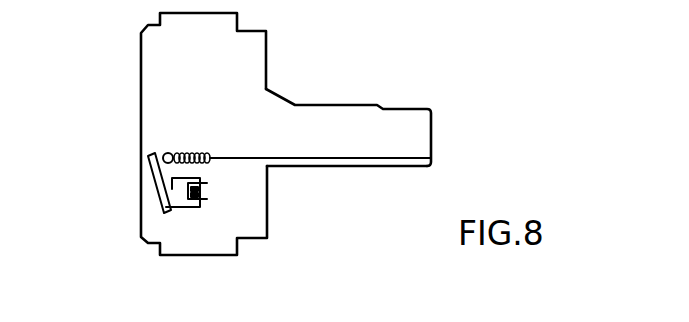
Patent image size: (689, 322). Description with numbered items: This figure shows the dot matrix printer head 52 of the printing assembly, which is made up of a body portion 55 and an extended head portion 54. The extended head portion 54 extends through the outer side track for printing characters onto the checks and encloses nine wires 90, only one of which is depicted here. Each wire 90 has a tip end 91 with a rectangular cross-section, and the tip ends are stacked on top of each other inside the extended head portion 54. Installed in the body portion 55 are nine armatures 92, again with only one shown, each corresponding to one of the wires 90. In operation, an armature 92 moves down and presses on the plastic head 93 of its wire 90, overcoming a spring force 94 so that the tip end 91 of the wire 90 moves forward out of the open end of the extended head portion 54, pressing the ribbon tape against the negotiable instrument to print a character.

The dot matrix printer head 52 is at (334, 44).
The body portion 55 is at (141, 69).
The extended head portion 54 is at (358, 105).
The wire 90 is at (343, 159).
The tip end 91 is at (432, 159).
The armature 92 is at (153, 177).
The plastic head 93 is at (166, 153).
The spring force 94 is at (200, 152).